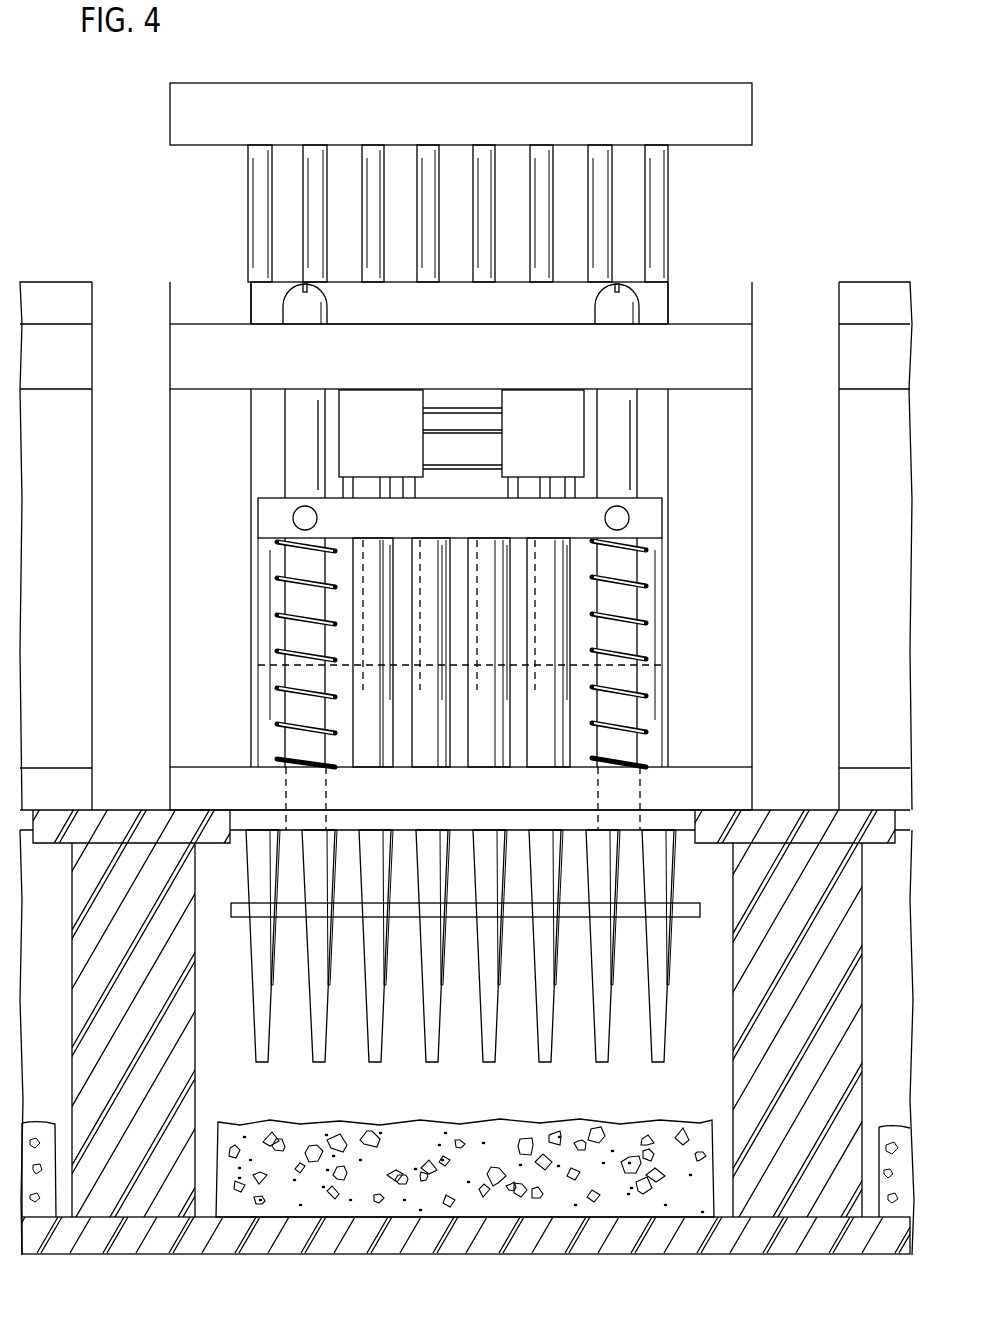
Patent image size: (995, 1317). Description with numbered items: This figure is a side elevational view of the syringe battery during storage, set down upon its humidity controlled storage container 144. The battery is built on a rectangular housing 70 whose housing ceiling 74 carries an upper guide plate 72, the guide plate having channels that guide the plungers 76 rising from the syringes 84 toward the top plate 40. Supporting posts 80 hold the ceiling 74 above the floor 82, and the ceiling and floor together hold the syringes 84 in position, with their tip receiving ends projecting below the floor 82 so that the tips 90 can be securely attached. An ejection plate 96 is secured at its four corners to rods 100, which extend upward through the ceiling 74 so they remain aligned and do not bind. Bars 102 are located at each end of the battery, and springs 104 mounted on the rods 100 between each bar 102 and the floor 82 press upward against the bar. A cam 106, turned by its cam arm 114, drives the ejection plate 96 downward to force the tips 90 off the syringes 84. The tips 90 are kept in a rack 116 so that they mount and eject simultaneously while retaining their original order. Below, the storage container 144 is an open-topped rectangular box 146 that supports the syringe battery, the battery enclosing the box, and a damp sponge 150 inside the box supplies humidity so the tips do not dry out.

The top plate / ram 40 is at (742, 104).
The plungers 76 is at (556, 207).
The upper guide plate 72 is at (655, 295).
The housing ceiling 74 is at (726, 357).
The supporting posts 80 is at (205, 485).
The rectangular housing 70 is at (722, 557).
The cam arm 114 is at (440, 456).
The cam 106 is at (498, 415).
The bars 102 is at (650, 522).
The rods 100 is at (640, 607).
The springs 104 is at (645, 725).
The syringes 84 is at (543, 683).
The floor 82 is at (213, 782).
The ejection plate 96 is at (683, 830).
The humidity controlled storage container 144 is at (876, 945).
The open-topped rectangular box 146 is at (820, 1076).
The tips 90 is at (322, 1000).
The rack 116 is at (236, 917).
The damp sponge 150 is at (614, 1112).